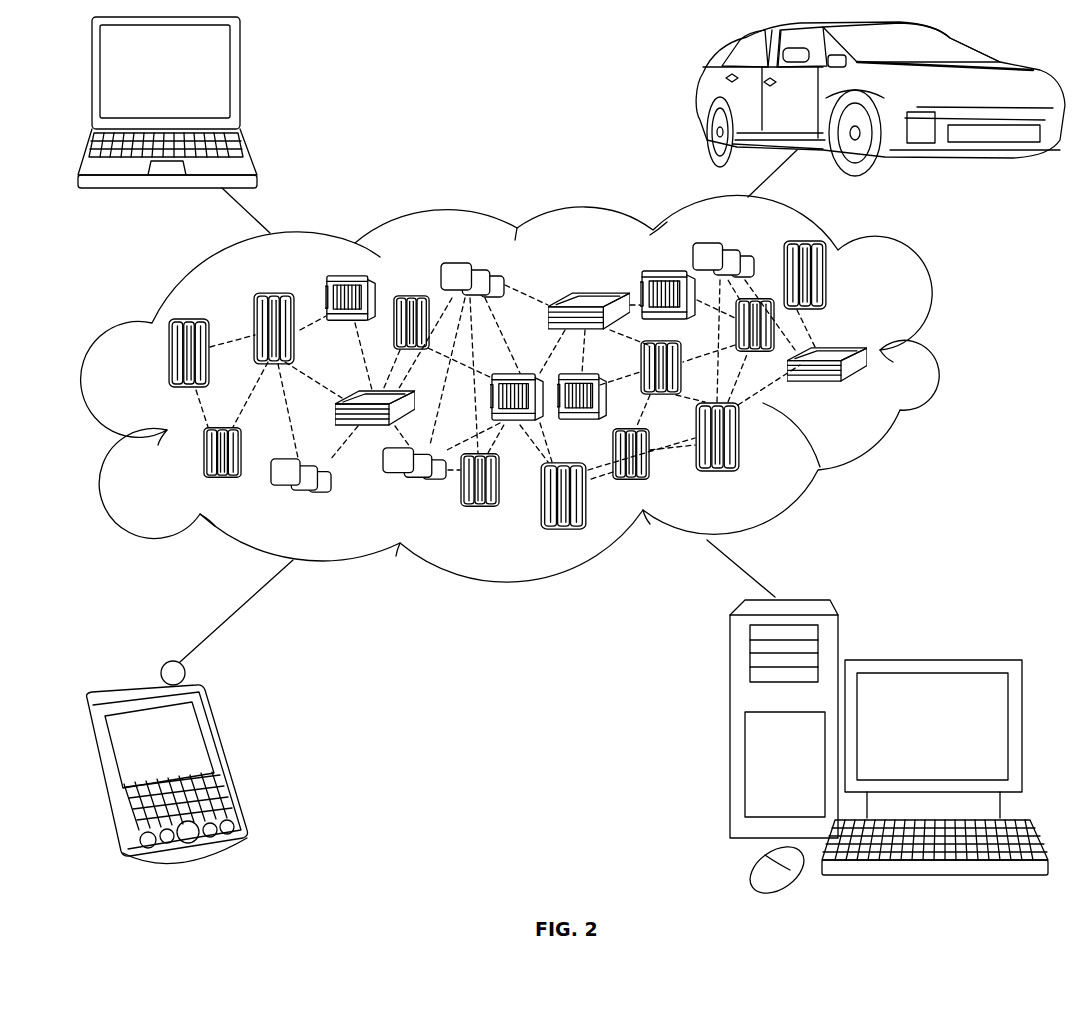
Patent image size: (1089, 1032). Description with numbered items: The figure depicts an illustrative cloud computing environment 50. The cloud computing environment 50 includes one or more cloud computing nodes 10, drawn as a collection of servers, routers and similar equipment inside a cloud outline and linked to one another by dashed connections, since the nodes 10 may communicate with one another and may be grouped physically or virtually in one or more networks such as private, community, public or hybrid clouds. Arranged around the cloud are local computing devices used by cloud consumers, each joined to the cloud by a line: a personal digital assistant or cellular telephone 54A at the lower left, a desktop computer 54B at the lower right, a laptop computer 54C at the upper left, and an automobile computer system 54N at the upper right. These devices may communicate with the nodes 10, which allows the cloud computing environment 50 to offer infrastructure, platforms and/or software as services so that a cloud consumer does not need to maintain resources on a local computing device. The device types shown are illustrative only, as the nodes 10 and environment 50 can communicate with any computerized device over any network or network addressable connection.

The cloud computing nodes 10 is at (868, 393).
The cloud computing environment 50 is at (930, 363).
The personal digital assistant (PDA) or cellular telephone 54A is at (227, 757).
The desktop computer 54B is at (928, 660).
The laptop computer 54C is at (238, 83).
The automobile computer system 54N is at (700, 105).